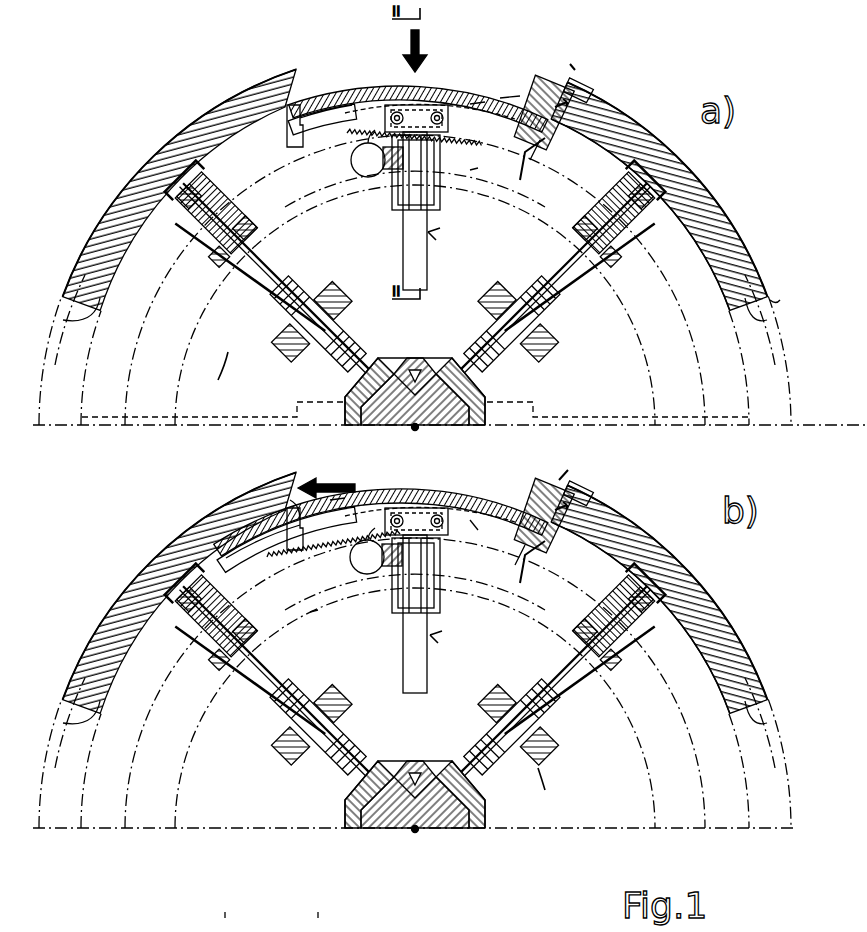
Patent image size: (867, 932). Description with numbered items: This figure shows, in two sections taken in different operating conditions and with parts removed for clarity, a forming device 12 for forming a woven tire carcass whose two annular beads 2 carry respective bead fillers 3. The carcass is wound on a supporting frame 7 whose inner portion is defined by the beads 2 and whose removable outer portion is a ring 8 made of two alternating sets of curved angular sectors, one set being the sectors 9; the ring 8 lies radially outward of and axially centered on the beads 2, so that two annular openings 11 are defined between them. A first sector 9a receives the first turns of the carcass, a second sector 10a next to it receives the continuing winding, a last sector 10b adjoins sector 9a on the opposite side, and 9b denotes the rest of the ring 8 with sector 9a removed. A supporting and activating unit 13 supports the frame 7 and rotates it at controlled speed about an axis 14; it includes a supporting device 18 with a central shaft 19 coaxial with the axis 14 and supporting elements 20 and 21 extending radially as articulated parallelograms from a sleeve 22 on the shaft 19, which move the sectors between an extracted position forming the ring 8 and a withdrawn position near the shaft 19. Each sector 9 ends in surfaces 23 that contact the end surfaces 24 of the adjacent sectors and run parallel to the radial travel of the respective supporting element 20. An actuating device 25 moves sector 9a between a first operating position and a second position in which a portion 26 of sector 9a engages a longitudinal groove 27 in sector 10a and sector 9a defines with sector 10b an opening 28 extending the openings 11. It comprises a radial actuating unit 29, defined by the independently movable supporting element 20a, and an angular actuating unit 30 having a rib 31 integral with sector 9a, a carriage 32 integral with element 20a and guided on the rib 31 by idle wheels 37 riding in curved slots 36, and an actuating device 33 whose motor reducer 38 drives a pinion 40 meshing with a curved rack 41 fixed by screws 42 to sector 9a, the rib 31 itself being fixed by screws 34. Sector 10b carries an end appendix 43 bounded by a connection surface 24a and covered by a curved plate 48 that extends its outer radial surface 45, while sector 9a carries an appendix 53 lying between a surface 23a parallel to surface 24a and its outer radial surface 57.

The annular beads 2 is at (655, 415).
The bead fillers 3 is at (695, 420).
The supporting frame 7 is at (630, 95).
The ring 8 is at (790, 420).
The curved angular sectors 9 is at (45, 380).
The first sector 9a is at (470, 100).
The rest of ring 9b is at (780, 298).
The second sector 10a is at (188, 120).
The last sector 10b is at (715, 170).
The annular openings 11 is at (740, 420).
The forming device 12 is at (255, 62).
The supporting and activating unit 13 is at (228, 352).
The axis 14 is at (422, 430).
The supporting device 18 is at (545, 360).
The central shaft 19 is at (418, 357).
The supporting elements 20 is at (292, 412).
The supporting element 20a is at (470, 228).
The supporting elements 21 is at (300, 290).
The sleeve 22 is at (398, 356).
The surfaces 23 is at (290, 130).
The surface 23a is at (545, 138).
The end surfaces 24 is at (300, 88).
The surface 24a is at (556, 80).
The actuating device 25 is at (403, 235).
The portion 26 is at (330, 95).
The longitudinal groove 27 is at (262, 110).
The opening 28 is at (472, 522).
The radial actuating unit 29 is at (430, 233).
The angular actuating unit 30 is at (450, 155).
The rib 31 is at (312, 150).
The carriage 32 is at (428, 104).
The actuating device 33 is at (390, 185).
The screws 34 is at (319, 922).
The curved slot 36 is at (502, 97).
The idle wheels 37 is at (395, 110).
The motor reducer 38 is at (366, 182).
The pinion 40 is at (372, 128).
The curved rack 41 is at (478, 172).
The screws 42 is at (226, 922).
The end appendix 43 is at (582, 64).
The outer radial surface 45 is at (735, 245).
The curved plate 48 is at (590, 85).
The appendix 53 is at (540, 145).
The outer radial surface 57 is at (472, 104).